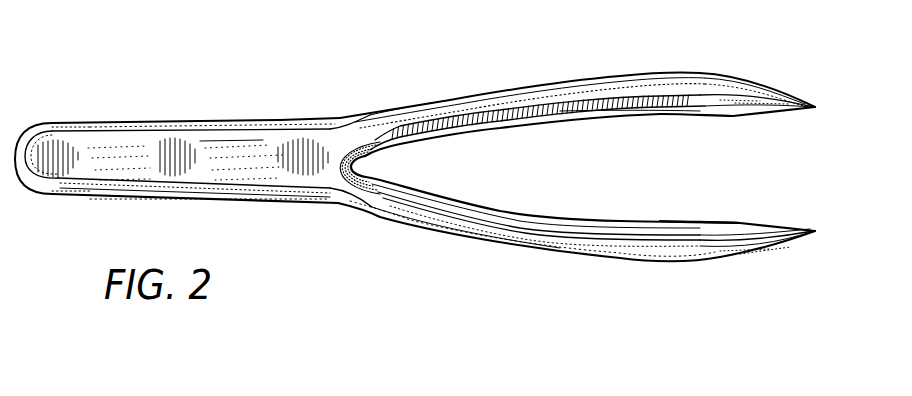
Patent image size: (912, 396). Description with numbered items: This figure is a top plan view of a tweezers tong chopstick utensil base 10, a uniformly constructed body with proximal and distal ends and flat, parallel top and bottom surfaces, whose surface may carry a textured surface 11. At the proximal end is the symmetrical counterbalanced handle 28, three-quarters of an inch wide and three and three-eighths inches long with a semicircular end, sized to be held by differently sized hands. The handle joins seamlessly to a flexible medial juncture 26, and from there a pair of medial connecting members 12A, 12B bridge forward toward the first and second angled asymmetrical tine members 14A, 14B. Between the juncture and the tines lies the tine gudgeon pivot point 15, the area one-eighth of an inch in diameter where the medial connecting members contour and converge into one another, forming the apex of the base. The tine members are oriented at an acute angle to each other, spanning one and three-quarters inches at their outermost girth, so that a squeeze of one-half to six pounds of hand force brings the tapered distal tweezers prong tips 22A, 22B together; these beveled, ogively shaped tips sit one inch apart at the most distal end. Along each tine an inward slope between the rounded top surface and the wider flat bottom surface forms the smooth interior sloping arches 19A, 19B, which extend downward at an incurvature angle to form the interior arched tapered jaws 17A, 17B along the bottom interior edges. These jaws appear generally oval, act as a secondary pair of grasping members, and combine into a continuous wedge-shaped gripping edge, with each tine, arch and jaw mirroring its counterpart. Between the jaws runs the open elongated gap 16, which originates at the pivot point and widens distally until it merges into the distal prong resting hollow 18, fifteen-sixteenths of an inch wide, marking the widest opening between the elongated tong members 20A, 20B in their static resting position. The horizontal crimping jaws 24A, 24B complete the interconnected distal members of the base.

The tweezers tong chopstick utensil base 10 is at (113, 112).
The textured surface 11 is at (222, 153).
The medial connecting member 12A is at (414, 104).
The medial connecting member 12B is at (400, 221).
The angled asymmetrical tine member 14A is at (500, 90).
The angled asymmetrical tine member 14B is at (507, 247).
The tine gudgeon pivot point 15 is at (338, 186).
The open elongated gap 16 is at (478, 168).
The interior arched tapered jaw 17A is at (568, 124).
The interior arched tapered jaw 17B is at (581, 214).
The distal prong resting hollow 18 is at (728, 173).
The smooth interior sloping arch 19A is at (593, 98).
The smooth interior sloping arch 19B is at (605, 228).
The elongated tong member 20A is at (677, 70).
The elongated tong member 20B is at (707, 261).
The tapered distal tweezers prong tip 22A is at (814, 107).
The tapered distal tweezers prong tip 22B is at (814, 232).
The horizontal crimping jaw 24A is at (733, 117).
The horizontal crimping jaw 24B is at (730, 223).
The flexible medial juncture 26 is at (340, 118).
The symmetrical counterbalanced handle 28 is at (35, 126).